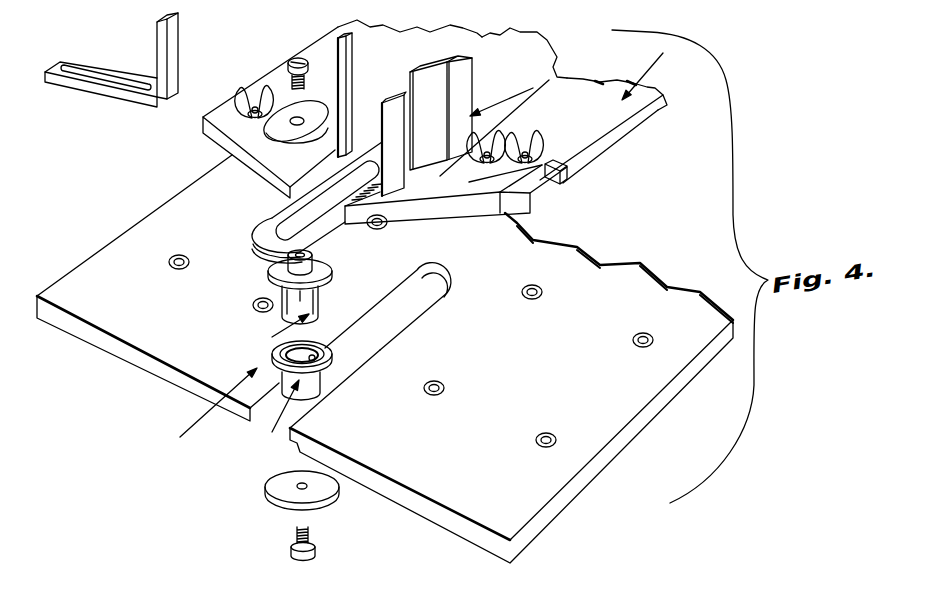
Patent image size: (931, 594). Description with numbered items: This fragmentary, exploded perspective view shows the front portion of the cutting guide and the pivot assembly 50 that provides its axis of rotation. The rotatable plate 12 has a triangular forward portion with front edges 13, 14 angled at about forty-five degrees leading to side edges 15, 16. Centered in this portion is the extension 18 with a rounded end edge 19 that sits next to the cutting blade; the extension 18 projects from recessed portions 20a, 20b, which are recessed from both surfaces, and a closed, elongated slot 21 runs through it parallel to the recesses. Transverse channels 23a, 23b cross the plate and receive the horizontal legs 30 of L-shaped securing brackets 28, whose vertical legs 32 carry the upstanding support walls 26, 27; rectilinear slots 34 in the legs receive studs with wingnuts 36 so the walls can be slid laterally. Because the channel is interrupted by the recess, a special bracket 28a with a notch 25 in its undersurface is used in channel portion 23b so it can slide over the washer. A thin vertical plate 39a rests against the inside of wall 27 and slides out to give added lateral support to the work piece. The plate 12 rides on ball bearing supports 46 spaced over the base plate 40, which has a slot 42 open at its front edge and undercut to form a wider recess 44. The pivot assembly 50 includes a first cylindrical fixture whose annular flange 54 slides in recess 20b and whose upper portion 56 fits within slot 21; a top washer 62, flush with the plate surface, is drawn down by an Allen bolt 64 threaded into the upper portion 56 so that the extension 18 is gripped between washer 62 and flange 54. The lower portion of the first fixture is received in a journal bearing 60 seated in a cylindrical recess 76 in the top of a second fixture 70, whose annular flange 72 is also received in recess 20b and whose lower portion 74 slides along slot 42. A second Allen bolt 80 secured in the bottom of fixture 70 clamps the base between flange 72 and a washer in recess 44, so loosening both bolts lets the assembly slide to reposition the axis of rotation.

The rotatable plate 12 is at (644, 69).
The front edge 13 is at (468, 206).
The front edge 14 is at (261, 176).
The side edge 15 is at (655, 106).
The side edge 16 is at (334, 30).
The extension 18 is at (259, 228).
The rounded end edge 19 is at (323, 242).
The recessed portion 20a is at (339, 130).
The recessed portion 20b is at (405, 198).
The slot 21 is at (266, 243).
The channel 23a is at (561, 179).
The channel portion 23b is at (240, 104).
The notch 25 is at (136, 98).
The support wall 26 is at (408, 56).
The support wall 27 is at (523, 43).
The L-shaped securing bracket 28 is at (570, 79).
The bracket 28a is at (91, 90).
The horizontal leg 30 is at (656, 112).
The vertical leg 32 is at (463, 81).
The rectilinear slot 34 is at (498, 142).
The wingnut 36 is at (540, 146).
The vertically-extending plate 39a is at (407, 133).
The base plate 40 is at (577, 357).
The slot 42 is at (443, 297).
The recess 44 is at (290, 443).
The ball bearing support 46 is at (178, 270).
The pivot assembly 50 is at (203, 412).
The annular flange 54 is at (328, 281).
The upper portion 56 is at (318, 266).
The journal bearing unit 60 is at (280, 320).
The top washer 62 is at (280, 135).
The Allen bolt 64 is at (300, 52).
The second cylindrical fixture 70 is at (348, 393).
The annular flange 72 is at (333, 353).
The lower portion 74 is at (316, 386).
The cylindrical recess 76 is at (318, 363).
The second Allen bolt 80 is at (300, 538).